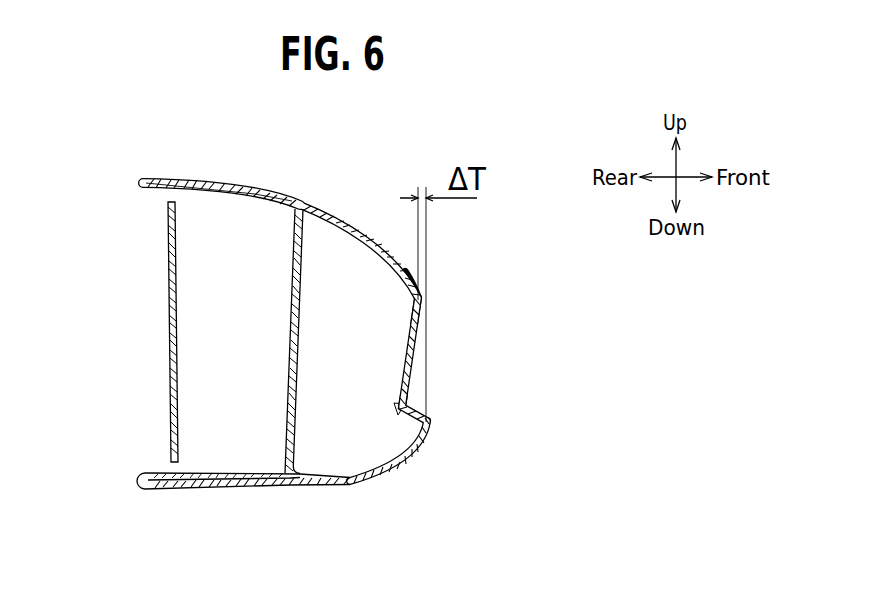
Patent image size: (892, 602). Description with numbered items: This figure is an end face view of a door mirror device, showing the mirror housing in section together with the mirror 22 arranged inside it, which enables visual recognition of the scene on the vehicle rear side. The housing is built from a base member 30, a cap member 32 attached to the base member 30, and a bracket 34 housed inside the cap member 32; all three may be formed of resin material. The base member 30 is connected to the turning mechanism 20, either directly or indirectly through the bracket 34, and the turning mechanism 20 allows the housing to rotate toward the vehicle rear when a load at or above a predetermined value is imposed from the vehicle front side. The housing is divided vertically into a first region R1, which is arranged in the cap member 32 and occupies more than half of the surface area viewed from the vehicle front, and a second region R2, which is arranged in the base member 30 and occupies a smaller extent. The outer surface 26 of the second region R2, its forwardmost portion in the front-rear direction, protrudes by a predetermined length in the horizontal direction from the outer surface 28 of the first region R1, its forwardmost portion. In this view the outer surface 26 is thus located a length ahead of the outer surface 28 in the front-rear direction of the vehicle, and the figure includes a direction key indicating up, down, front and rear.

The turning mechanism 20 is at (326, 347).
The mirror 22 is at (169, 318).
The outer surface of the second region 26 is at (432, 423).
The outer surface of the first region 28 is at (420, 302).
The base member 30 is at (346, 485).
The cap member 32 is at (280, 192).
The bracket 34 is at (290, 345).
The first region R1 is at (425, 350).
The second region R2 is at (418, 452).